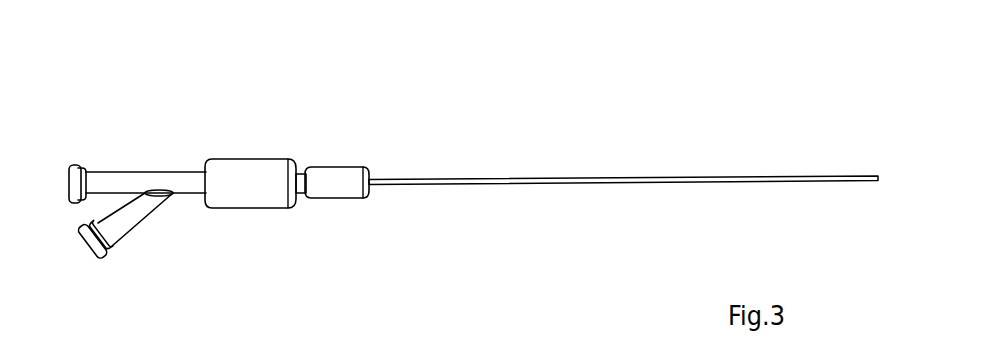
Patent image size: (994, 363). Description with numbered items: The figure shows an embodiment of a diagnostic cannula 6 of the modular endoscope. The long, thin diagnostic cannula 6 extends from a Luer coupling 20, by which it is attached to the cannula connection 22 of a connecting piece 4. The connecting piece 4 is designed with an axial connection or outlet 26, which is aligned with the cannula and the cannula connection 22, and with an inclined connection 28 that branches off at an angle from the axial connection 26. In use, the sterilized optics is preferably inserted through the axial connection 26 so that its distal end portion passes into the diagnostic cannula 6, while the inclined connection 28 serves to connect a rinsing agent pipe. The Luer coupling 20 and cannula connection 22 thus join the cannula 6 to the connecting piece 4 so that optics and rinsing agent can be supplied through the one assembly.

The axial connection 26 is at (112, 176).
The inclined connection 28 is at (120, 223).
The connecting piece 4 is at (244, 178).
The cannula connection 22 is at (298, 172).
The Luer coupling 20 is at (356, 172).
The diagnostic cannula 6 is at (578, 177).